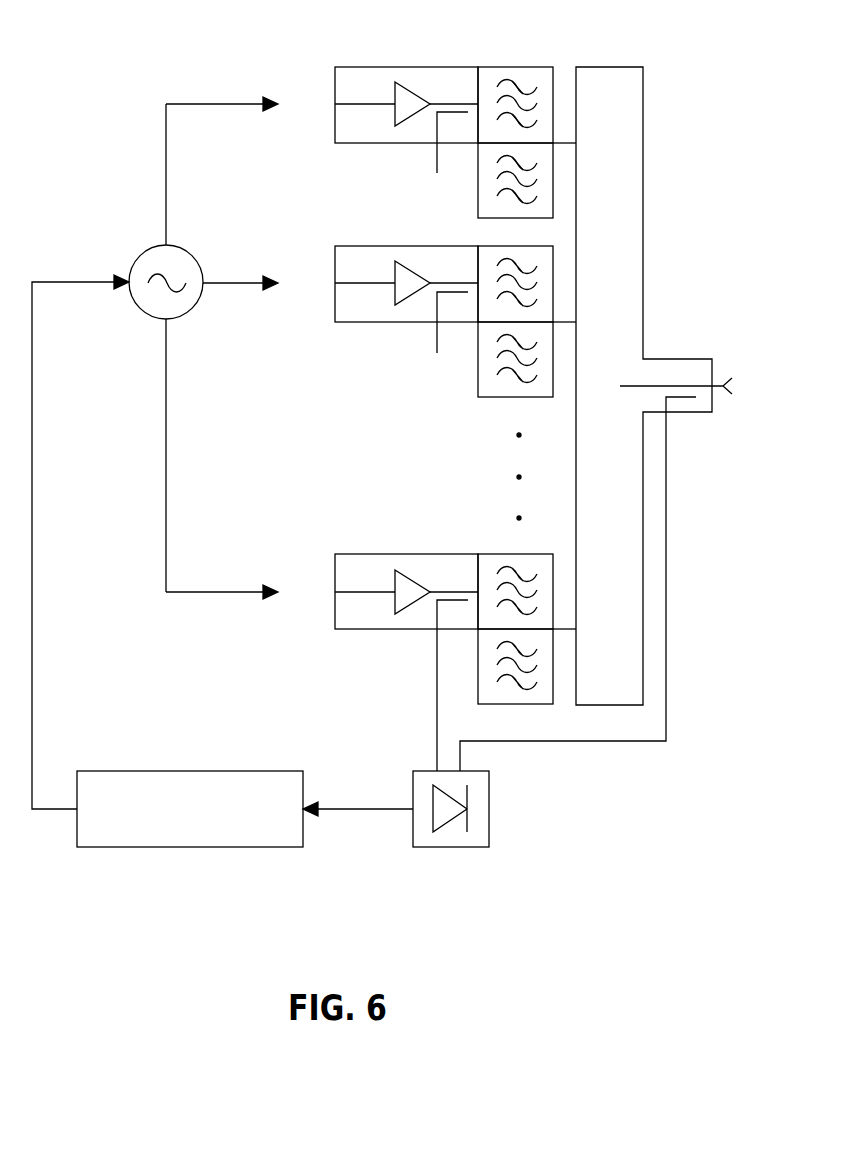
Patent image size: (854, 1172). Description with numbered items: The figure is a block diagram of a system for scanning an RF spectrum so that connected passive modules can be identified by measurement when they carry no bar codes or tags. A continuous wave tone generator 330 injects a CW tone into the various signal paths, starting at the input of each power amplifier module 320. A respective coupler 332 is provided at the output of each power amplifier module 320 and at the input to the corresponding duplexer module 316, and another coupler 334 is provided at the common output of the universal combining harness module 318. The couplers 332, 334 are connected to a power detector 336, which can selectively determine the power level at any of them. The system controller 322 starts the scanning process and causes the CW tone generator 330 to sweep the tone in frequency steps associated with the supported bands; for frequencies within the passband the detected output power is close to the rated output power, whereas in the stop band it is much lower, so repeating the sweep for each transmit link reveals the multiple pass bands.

The duplexer module 316 is at (516, 67).
The universal combining harness module 318 is at (612, 67).
The power amplifier module 320 is at (404, 67).
The system controller 322 is at (190, 809).
The continuous wave tone generator 330 is at (136, 305).
The coupler 332 is at (437, 160).
The coupler 334 is at (678, 400).
The power detector 336 is at (430, 848).